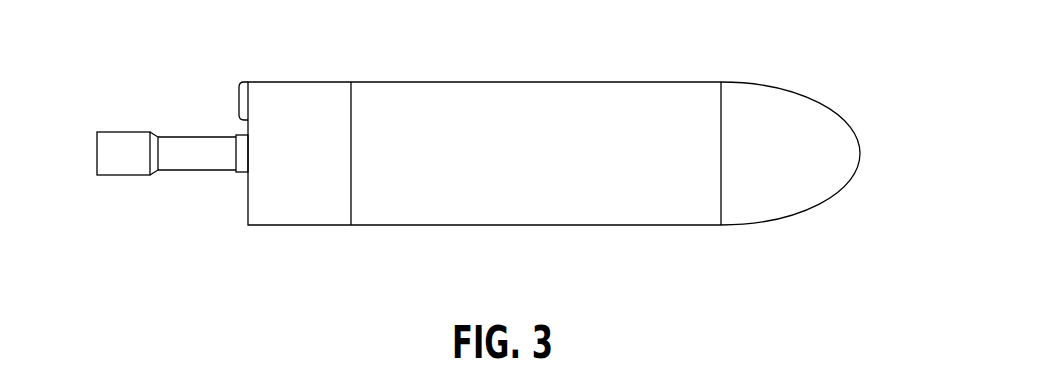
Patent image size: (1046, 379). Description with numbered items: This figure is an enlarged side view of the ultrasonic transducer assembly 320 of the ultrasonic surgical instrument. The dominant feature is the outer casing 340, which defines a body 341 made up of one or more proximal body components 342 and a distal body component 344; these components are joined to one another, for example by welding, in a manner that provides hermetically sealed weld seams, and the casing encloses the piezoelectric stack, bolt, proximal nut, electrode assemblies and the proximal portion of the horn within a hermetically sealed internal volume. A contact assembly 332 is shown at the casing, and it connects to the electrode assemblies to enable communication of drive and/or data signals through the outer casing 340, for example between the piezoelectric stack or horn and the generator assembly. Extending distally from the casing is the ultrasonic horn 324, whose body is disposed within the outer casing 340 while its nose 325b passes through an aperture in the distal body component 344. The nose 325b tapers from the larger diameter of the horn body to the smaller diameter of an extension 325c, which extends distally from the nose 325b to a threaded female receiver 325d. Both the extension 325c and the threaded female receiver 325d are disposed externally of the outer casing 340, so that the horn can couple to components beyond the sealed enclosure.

The ultrasonic transducer assembly 320 is at (440, 41).
The ultrasonic horn 324 is at (139, 191).
The nose 325b is at (246, 166).
The extension 325c is at (193, 163).
The threaded female receiver 325d is at (137, 130).
The contact assembly 332 is at (240, 104).
The outer casing 340 is at (548, 61).
The body 341 is at (640, 82).
The proximal body component 342 is at (598, 226).
The distal body component 344 is at (313, 226).